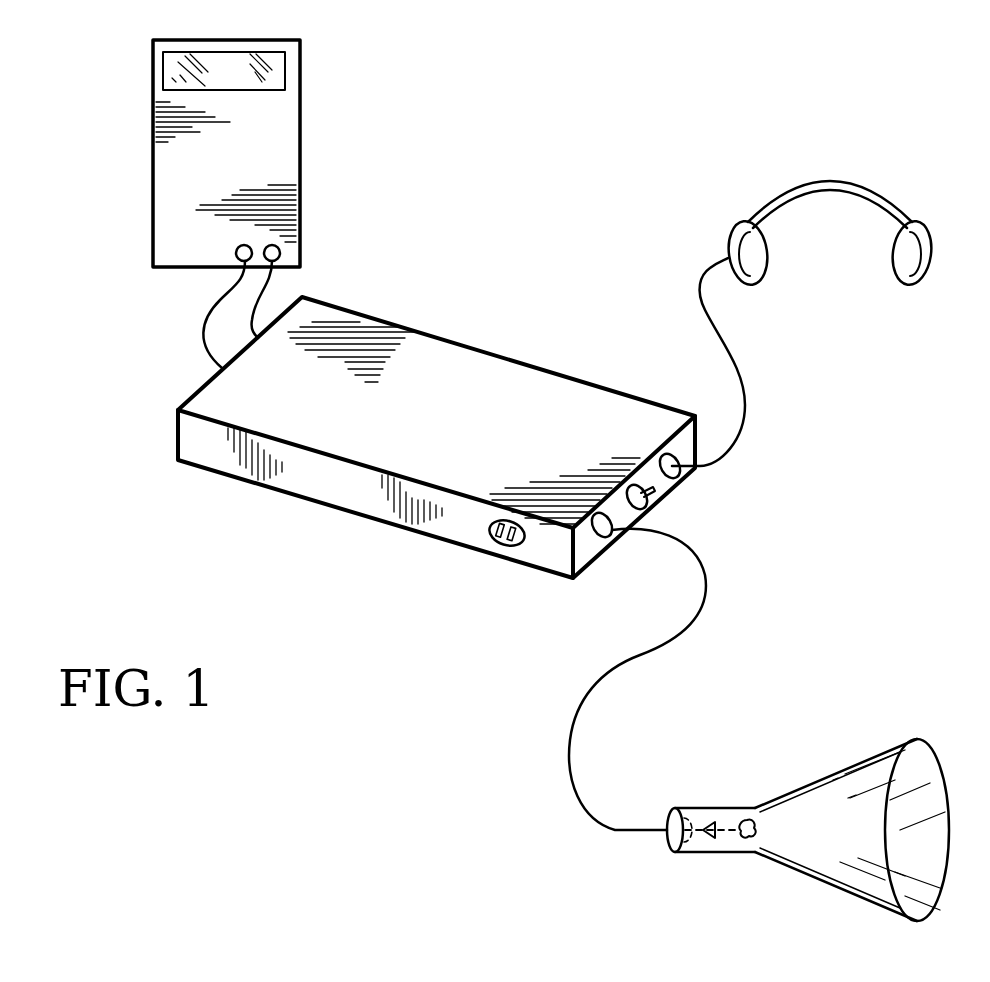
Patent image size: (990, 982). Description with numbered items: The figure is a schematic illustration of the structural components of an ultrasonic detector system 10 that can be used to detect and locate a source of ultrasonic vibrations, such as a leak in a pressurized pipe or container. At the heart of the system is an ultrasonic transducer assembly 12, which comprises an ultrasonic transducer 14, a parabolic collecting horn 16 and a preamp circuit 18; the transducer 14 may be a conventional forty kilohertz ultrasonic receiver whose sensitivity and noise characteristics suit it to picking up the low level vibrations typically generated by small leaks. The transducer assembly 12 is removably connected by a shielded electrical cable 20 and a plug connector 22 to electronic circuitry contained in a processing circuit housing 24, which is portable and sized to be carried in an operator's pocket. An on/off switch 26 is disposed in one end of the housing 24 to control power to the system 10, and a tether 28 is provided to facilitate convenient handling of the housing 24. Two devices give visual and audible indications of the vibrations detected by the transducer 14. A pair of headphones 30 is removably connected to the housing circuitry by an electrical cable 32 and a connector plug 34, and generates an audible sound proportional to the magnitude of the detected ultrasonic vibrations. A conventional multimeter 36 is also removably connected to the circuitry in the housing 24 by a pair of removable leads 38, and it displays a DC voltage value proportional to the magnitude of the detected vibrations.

The ultrasonic detector system 10 is at (929, 408).
The ultrasonic transducer assembly 12 is at (790, 780).
The ultrasonic transducer 14 is at (740, 822).
The parabolic collecting horn 16 is at (848, 763).
The preamp circuit 18 is at (705, 828).
The shielded electrical cable 20 is at (707, 628).
The plug connector 22 is at (606, 537).
The processing circuit housing 24 is at (432, 345).
The on/off switch 26 is at (660, 508).
The tether 28 is at (505, 548).
The headphones 30 is at (907, 202).
The electrical cable 32 is at (748, 405).
The connector plug 34 is at (670, 462).
The multimeter 36 is at (285, 157).
The removable leads 38 is at (240, 288).